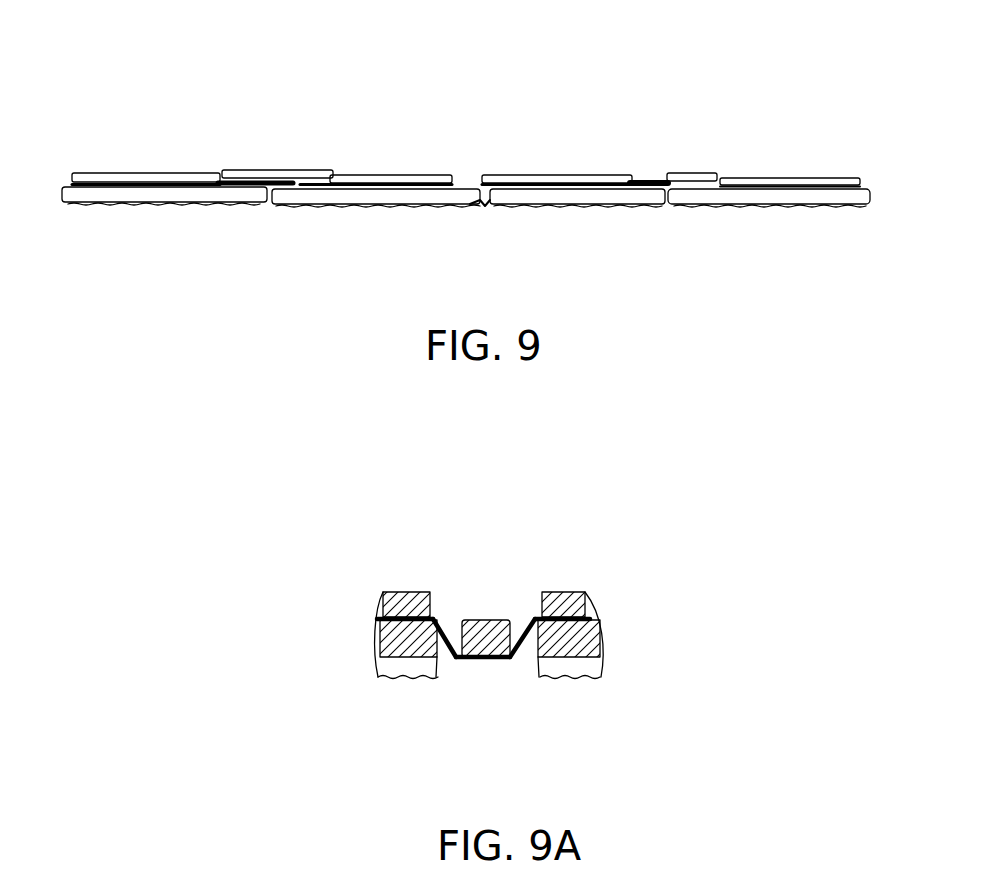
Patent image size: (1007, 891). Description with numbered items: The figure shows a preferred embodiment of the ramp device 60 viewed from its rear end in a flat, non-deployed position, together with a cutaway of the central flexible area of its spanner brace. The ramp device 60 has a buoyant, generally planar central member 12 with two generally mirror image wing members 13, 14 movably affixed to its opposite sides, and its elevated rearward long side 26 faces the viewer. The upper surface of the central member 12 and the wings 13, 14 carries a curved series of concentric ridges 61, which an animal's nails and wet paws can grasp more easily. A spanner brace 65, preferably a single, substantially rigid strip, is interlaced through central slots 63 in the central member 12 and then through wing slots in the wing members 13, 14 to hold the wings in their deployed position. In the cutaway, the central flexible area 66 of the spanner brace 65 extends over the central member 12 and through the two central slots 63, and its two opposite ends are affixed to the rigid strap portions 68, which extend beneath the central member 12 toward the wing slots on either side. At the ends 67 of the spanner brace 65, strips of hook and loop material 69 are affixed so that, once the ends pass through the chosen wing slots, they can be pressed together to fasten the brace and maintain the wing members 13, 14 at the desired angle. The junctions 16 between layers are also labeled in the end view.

In FIG. 9, the ramp device 60 is at (437, 132).
In FIG. 9, the central member 12 is at (345, 195).
In FIG. 9A, the central member 12 is at (485, 633).
In FIG. 9, the wing member 13 is at (165, 190).
In FIG. 9A, the wing member 13 is at (385, 630).
In FIG. 9, the wing member 14 is at (812, 195).
In FIG. 9A, the wing member 14 is at (595, 643).
In FIG. 9, the rearward long side 26 is at (562, 190).
In FIG. 9, the conductive connection pad 16 is at (268, 175).
In FIG. 9, the concentric ridges 61 is at (95, 203).
In FIG. 9A, the concentric ridges 61 is at (390, 670).
In FIG. 9A, the central slots 63 is at (446, 660).
In FIG. 9, the spanner brace 65 is at (188, 172).
In FIG. 9A, the spanner brace 65 is at (607, 594).
In FIG. 9, the central flexible area 66 is at (470, 202).
In FIG. 9A, the central flexible area 66 is at (443, 622).
In FIG. 9, the end portions 67 is at (740, 176).
In FIG. 9, the rigid strap portions 68 is at (376, 175).
In FIG. 9A, the rigid strap portions 68 is at (400, 603).
In FIG. 9, the hook and loop strips 69 is at (95, 175).